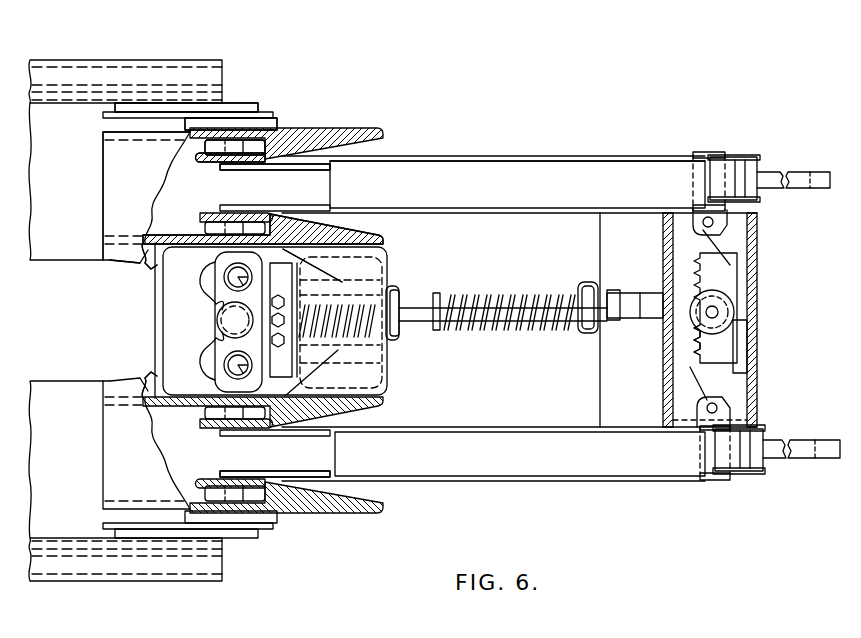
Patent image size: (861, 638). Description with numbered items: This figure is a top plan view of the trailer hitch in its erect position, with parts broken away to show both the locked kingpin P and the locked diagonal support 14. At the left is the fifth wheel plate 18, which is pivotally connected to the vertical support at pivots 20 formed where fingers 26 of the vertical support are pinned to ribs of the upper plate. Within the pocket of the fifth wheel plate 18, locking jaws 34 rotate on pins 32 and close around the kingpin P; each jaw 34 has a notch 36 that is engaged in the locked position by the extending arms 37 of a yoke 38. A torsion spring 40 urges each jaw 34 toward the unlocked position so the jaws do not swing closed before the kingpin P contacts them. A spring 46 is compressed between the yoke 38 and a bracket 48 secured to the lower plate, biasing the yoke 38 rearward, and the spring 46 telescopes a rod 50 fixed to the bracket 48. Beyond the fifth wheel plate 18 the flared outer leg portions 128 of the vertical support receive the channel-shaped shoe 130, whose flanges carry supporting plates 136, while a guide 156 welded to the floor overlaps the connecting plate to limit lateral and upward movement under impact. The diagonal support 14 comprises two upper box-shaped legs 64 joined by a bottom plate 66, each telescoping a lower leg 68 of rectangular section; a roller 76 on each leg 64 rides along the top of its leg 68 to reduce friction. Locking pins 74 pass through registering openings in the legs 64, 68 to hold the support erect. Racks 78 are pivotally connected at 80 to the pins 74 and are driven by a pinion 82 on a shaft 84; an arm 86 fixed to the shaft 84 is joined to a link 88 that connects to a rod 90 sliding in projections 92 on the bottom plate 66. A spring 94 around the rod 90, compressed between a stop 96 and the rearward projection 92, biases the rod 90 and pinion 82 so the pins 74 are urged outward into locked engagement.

The diagonal support 14 is at (526, 155).
The fifth wheel plate 18 is at (128, 263).
The pivot 20 is at (234, 449).
The fingers 26 is at (217, 148).
The pins 32 is at (233, 275).
The locking jaws 34 is at (200, 292).
The notch 36 is at (200, 289).
The extending arms 37 is at (202, 222).
The yoke 38 is at (372, 258).
The torsion spring 40 is at (205, 307).
The spring 46 is at (352, 327).
The bracket 48 is at (297, 300).
The rod 50 is at (350, 330).
The upper diagonal legs 64 is at (470, 168).
The bottom plate 66 is at (512, 262).
The lower leg 68 is at (807, 185).
The locking pins 74 is at (703, 152).
The roller 76 is at (745, 175).
The racks 78 is at (742, 298).
The pivotal connection 80 is at (706, 226).
The pinion 82 is at (747, 321).
The shaft 84 is at (712, 308).
The arm 86 is at (722, 335).
The link 88 is at (637, 295).
The rod 90 is at (415, 326).
The projections 92 is at (398, 288).
The spring 94 is at (543, 326).
The stop 96 is at (443, 329).
The outer leg portion 128 is at (273, 122).
The shoe 130 is at (65, 248).
The supporting plates 136 is at (235, 108).
The guide 156 is at (107, 62).
The kingpin P is at (235, 323).